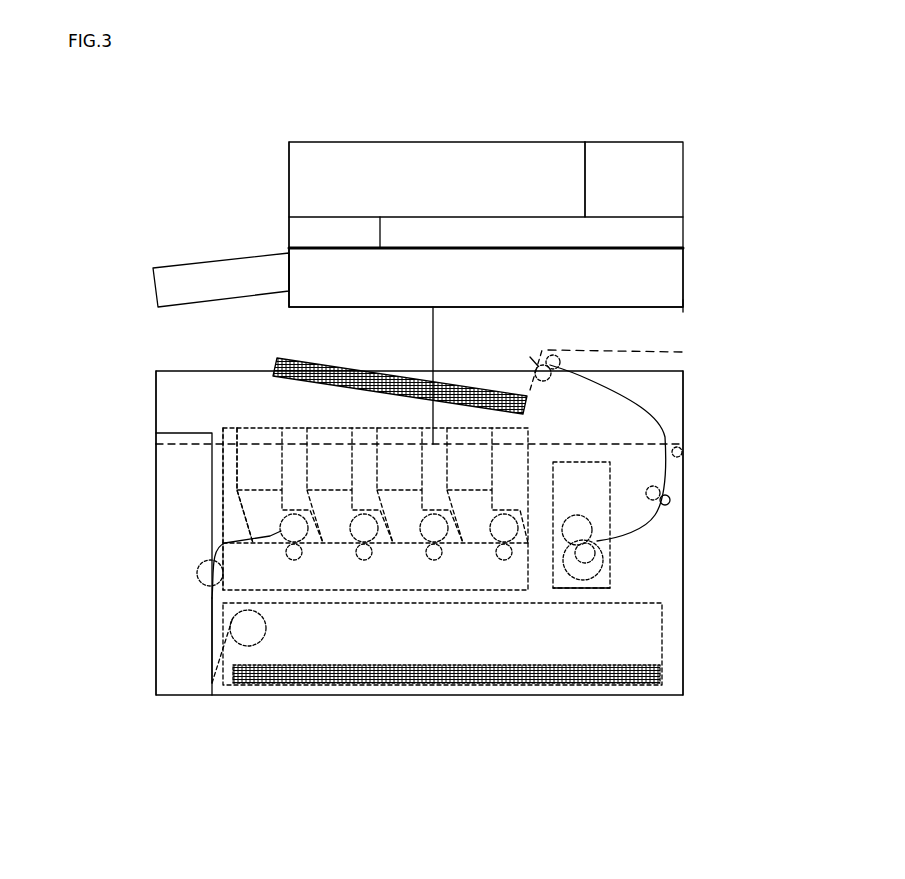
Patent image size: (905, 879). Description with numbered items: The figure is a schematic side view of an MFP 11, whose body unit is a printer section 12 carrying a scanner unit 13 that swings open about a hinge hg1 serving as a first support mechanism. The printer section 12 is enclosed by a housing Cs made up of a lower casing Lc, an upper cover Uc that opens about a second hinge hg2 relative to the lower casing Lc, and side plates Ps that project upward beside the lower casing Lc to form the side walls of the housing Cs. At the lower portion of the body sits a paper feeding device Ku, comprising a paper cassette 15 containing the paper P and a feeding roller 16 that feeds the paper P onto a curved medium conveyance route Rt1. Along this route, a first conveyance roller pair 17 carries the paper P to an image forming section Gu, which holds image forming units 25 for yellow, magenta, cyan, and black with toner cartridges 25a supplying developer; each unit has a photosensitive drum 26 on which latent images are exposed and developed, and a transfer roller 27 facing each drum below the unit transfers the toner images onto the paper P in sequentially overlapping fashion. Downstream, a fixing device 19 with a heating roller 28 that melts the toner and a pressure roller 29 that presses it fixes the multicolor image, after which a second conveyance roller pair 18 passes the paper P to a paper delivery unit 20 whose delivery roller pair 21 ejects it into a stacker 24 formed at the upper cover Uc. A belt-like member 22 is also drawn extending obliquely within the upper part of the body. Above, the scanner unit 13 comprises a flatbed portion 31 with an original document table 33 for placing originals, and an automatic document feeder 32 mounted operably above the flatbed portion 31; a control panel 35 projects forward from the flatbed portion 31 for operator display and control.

The MFP 11 is at (312, 125).
The printer section 12 is at (685, 645).
The scanner unit 13 is at (685, 194).
The paper cassette 15 is at (212, 683).
The feeding roller 16 is at (245, 647).
The first conveyance roller pair 17 is at (195, 582).
The second conveyance roller pair 18 is at (668, 500).
The fixing device 19 is at (590, 596).
The paper delivery unit 20 is at (528, 350).
The delivery roller pair 21 is at (557, 360).
The exposure belt 22 is at (320, 363).
The stacker 24 is at (531, 359).
The image forming unit 25 is at (240, 504).
The toner cartridge 25a is at (242, 500).
The photosensitive drum 26 is at (282, 531).
The transfer roller 27 is at (294, 561).
The heating roller 28 is at (577, 515).
The pressure roller 29 is at (572, 580).
The flatbed portion 31 is at (664, 280).
The automatic document feeder 32 is at (660, 162).
The original document table 33 is at (380, 217).
The control panel 35 is at (200, 263).
The housing Cs is at (150, 351).
The upper cover Uc is at (155, 407).
The lower casing Lc is at (156, 568).
The image forming section Gu is at (222, 532).
The side plate Ps is at (653, 568).
The medium conveyance route Rt1 is at (209, 601).
The paper feeding device Ku is at (145, 766).
The hinge hg1 is at (684, 306).
The hinge hg2 is at (683, 449).
The paper P is at (470, 672).